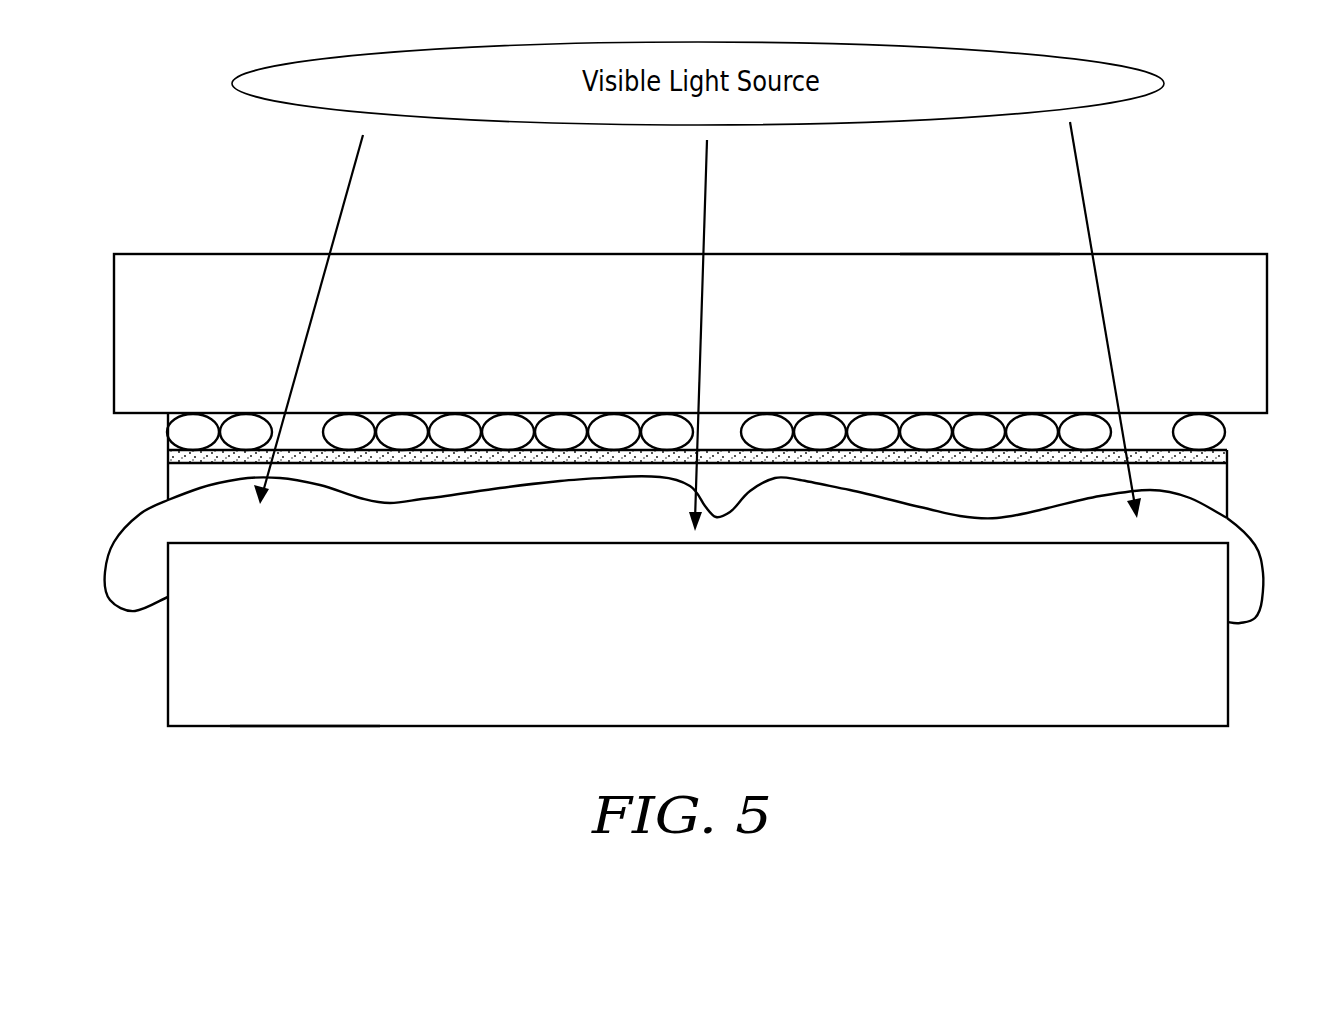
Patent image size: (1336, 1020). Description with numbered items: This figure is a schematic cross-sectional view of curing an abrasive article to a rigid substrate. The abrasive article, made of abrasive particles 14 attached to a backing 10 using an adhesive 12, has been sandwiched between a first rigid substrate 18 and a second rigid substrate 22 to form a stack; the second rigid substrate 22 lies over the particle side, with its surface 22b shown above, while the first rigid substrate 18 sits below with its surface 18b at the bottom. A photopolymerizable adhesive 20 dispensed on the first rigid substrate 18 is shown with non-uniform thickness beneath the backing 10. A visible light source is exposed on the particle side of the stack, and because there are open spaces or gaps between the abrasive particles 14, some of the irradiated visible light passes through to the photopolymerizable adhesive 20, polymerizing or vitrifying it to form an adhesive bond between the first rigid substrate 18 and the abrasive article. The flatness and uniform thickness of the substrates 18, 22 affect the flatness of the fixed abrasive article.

The backing 10 is at (1215, 492).
The adhesive 12 is at (1230, 455).
The abrasive particles 14 is at (1213, 432).
The first rigid substrate 18 is at (1208, 678).
The bottom surface of substrate 18b is at (297, 727).
The photopolymerizable adhesive 20 is at (1253, 598).
The second rigid substrate 22 is at (887, 275).
The top surface of plate 22b is at (975, 253).